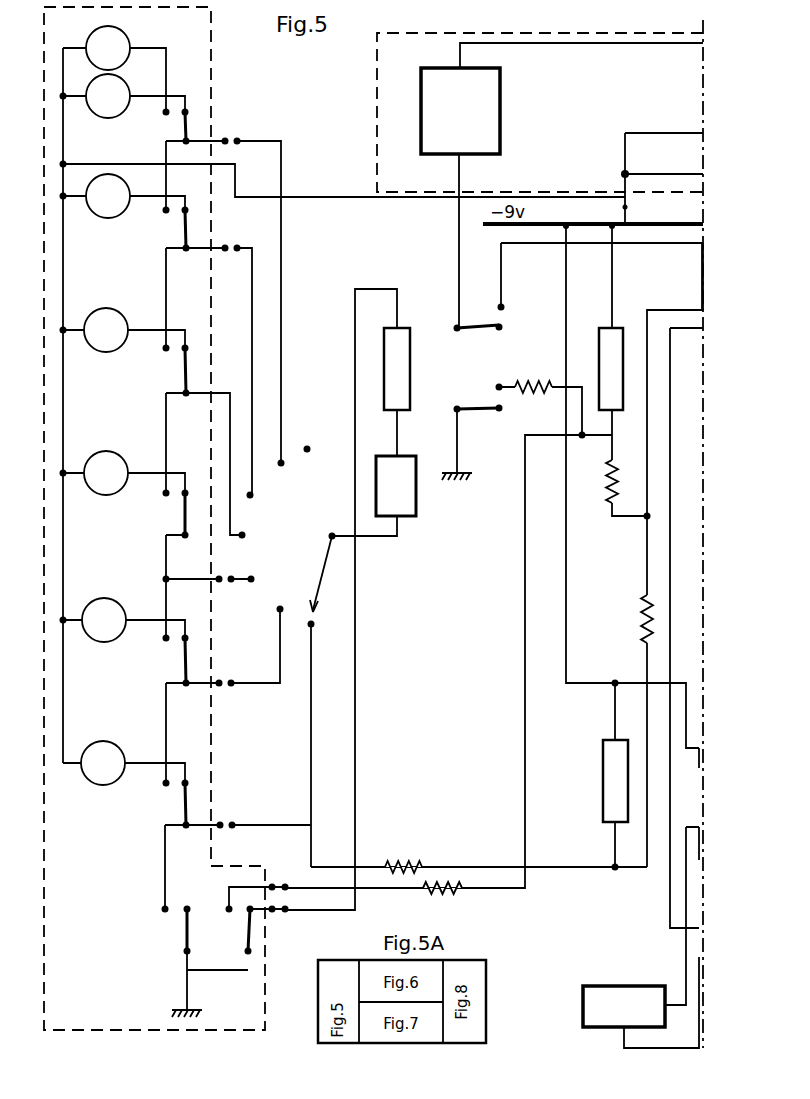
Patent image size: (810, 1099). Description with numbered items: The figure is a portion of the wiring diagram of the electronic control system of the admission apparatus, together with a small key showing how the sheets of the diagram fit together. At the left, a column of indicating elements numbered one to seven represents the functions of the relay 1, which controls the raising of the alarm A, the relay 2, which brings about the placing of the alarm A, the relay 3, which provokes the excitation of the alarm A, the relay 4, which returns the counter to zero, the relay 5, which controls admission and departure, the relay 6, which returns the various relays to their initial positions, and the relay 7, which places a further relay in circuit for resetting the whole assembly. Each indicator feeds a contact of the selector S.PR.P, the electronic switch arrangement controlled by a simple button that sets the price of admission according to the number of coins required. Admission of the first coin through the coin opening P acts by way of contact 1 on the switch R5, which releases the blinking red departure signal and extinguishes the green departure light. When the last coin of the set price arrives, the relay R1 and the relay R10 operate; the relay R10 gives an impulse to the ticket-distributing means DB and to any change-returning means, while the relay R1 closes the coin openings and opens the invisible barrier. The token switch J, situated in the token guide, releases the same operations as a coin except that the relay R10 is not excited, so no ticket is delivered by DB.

The relay 1 / contact 1 is at (195, 763).
The relay 2 is at (178, 686).
The relay 3 is at (165, 544).
The relay 4 is at (160, 428).
The relay 5 is at (165, 340).
The relay 6 is at (174, 281).
The relay 7 is at (187, 249).
The coin opening P is at (205, 962).
The token switch J is at (257, 919).
The ticket-distributing means DB is at (562, 185).
The relay R1 is at (612, 424).
The switch R5 is at (598, 775).
The relay R10 is at (419, 392).
The alarm A is at (498, 741).
The electronic switch arrangement / price selector S.PR.P is at (366, 573).